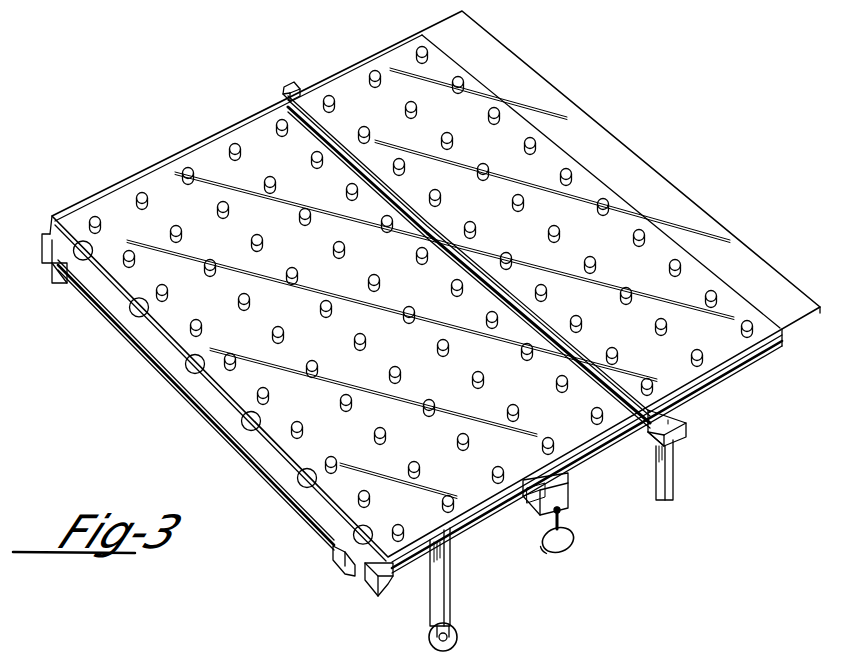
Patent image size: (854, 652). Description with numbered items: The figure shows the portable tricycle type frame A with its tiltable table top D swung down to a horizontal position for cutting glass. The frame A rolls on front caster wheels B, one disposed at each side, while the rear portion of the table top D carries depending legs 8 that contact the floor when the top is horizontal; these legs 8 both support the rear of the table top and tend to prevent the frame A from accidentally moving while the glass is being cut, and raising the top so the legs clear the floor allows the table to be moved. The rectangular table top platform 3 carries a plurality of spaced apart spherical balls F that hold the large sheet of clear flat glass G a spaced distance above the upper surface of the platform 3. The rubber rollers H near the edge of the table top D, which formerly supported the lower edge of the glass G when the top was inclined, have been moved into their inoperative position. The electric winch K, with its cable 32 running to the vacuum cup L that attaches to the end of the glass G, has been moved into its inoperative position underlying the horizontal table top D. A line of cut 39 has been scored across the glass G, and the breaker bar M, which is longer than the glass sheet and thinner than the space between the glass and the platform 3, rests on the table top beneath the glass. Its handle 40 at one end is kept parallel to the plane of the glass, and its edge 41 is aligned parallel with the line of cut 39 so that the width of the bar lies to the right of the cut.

The table top platform 3 is at (213, 394).
The depending leg 8 is at (674, 470).
The cable 32 is at (560, 519).
The line of cut 39 is at (326, 82).
The handle 40 is at (683, 427).
The edge of breaker bar 41 is at (653, 437).
The portable tricycle type frame A is at (430, 606).
The front caster wheel B is at (458, 631).
The tiltable table top D is at (146, 355).
The spherical balls F is at (422, 48).
The glass sheet G is at (612, 126).
The rubber rollers H is at (242, 423).
The electric winch K is at (569, 483).
The vacuum cup L is at (562, 551).
The breaker bar M is at (284, 89).